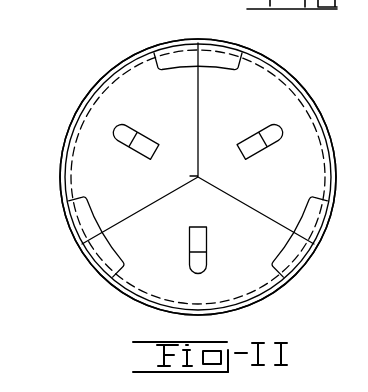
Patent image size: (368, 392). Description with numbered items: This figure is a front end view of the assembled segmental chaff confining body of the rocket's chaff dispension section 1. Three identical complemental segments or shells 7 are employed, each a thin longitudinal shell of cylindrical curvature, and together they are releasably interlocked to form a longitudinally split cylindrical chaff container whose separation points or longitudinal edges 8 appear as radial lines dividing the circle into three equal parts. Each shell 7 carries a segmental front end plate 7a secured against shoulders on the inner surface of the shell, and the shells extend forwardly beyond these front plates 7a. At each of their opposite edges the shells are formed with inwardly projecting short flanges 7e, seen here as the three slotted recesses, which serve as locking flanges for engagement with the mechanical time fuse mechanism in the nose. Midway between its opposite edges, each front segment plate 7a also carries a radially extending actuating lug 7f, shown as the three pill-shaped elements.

The chaff dispension section 1 is at (306, 86).
The segments or complemental shells 7 is at (71, 123).
The front end plate 7a is at (122, 86).
The locking flanges 7e is at (181, 62).
The actuating lug 7f is at (136, 148).
The separation points or longitudinal edges 8 is at (198, 38).